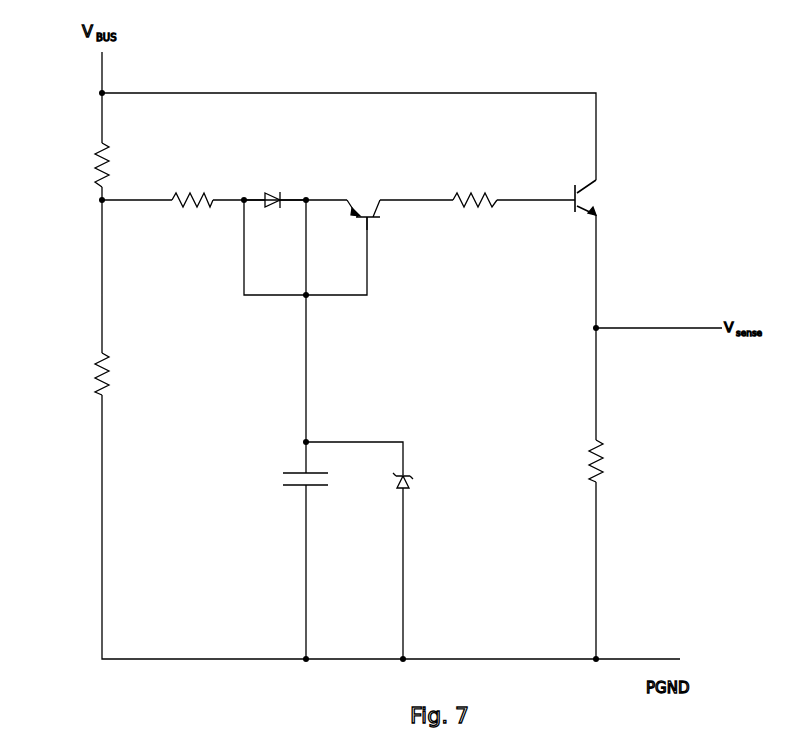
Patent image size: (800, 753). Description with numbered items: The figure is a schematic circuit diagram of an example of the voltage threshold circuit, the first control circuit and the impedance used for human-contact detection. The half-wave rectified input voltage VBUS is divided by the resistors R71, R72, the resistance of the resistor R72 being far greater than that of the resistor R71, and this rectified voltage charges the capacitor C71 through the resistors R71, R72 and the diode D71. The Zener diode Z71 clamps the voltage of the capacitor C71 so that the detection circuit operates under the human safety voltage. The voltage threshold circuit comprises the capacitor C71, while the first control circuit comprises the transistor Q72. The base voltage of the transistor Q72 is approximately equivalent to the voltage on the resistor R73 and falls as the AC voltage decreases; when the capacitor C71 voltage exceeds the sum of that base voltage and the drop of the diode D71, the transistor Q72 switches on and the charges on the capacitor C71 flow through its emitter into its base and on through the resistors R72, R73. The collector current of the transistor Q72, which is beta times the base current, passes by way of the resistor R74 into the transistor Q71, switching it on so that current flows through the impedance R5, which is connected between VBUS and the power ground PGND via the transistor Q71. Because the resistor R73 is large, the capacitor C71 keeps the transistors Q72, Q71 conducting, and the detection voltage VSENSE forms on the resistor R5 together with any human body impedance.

The resistor R71 is at (79, 165).
The resistor R72 is at (192, 186).
The resistor R73 is at (75, 374).
The resistor R74 is at (475, 186).
The impedance R5 is at (573, 461).
The diode D71 is at (275, 186).
The transistor Q71 is at (603, 197).
The transistor Q72 is at (363, 197).
The capacitor C71 is at (281, 471).
The Zener diode Z71 is at (428, 473).